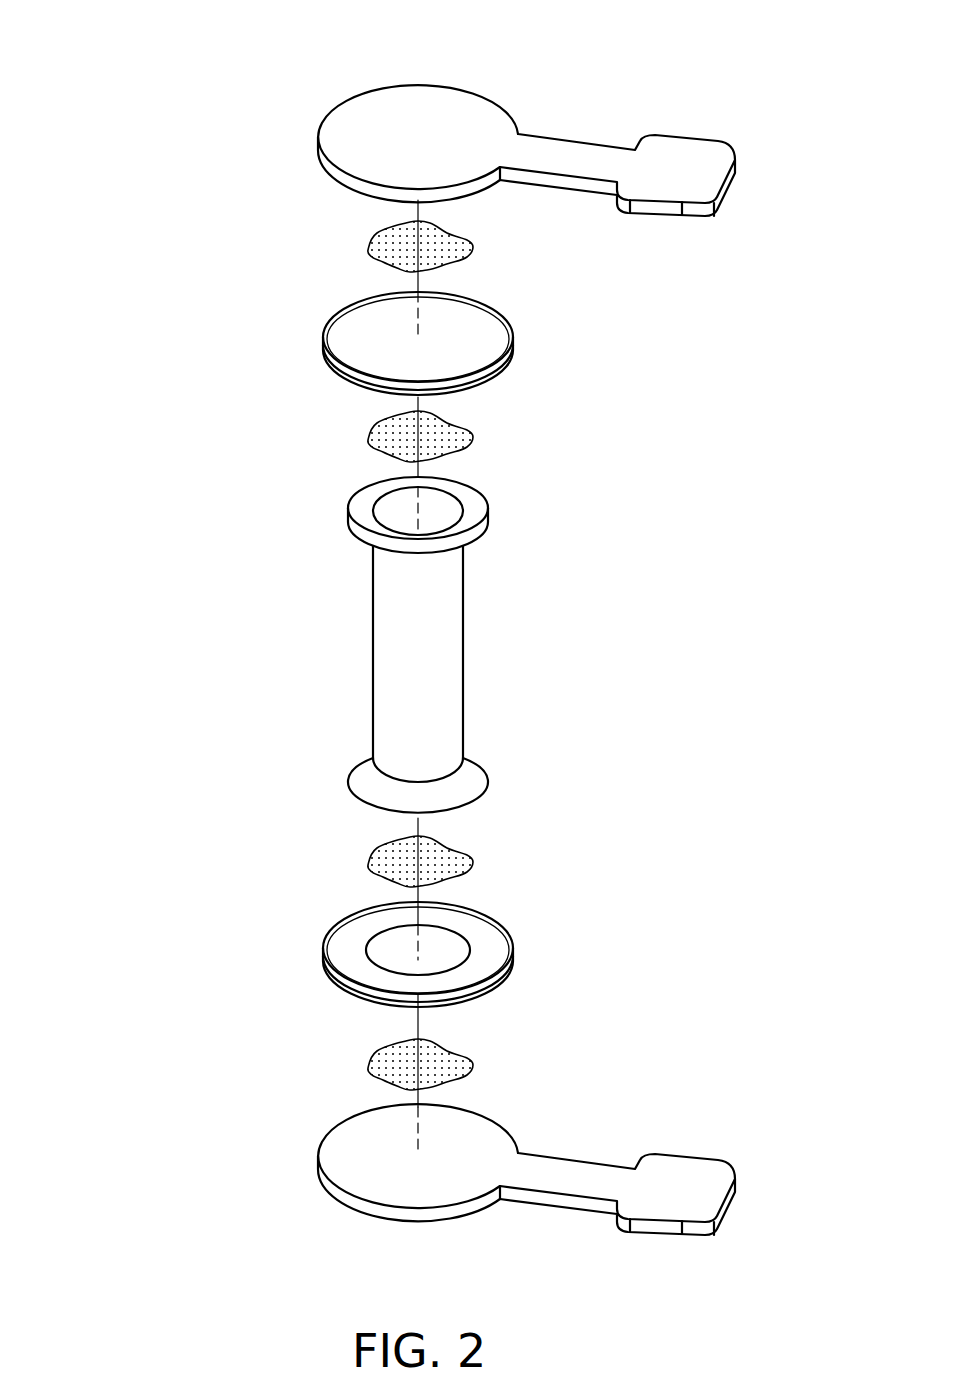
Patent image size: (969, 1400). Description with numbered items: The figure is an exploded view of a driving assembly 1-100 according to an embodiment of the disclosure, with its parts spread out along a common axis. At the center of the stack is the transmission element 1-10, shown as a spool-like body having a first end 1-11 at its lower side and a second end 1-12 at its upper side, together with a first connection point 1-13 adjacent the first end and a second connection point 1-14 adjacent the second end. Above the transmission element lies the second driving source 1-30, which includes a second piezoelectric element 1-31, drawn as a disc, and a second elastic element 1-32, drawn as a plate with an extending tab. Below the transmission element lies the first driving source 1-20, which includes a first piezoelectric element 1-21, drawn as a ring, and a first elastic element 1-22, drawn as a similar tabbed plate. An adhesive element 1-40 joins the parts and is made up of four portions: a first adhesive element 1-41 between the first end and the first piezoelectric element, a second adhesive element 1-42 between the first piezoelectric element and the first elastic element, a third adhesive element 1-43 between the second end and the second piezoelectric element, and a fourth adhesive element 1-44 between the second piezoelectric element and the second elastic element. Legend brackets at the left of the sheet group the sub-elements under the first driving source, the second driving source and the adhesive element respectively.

The driving assembly 1-100 is at (118, 26).
The transmission element 1-10 is at (463, 650).
The first end 1-11 is at (460, 817).
The second end 1-12 is at (472, 503).
The first connection point 1-13 is at (480, 768).
The second connection point 1-14 is at (482, 531).
The first driving source 1-20 is at (158, 195).
The first piezoelectric element 1-21 is at (493, 949).
The first elastic element 1-22 is at (445, 1190).
The second driving source 1-30 is at (158, 288).
The second piezoelectric element 1-31 is at (493, 342).
The second elastic element 1-32 is at (467, 112).
The adhesive element 1-40 is at (158, 387).
The first adhesive element 1-41 is at (462, 864).
The second adhesive element 1-42 is at (462, 1065).
The third adhesive element 1-43 is at (462, 440).
The fourth adhesive element 1-44 is at (462, 250).